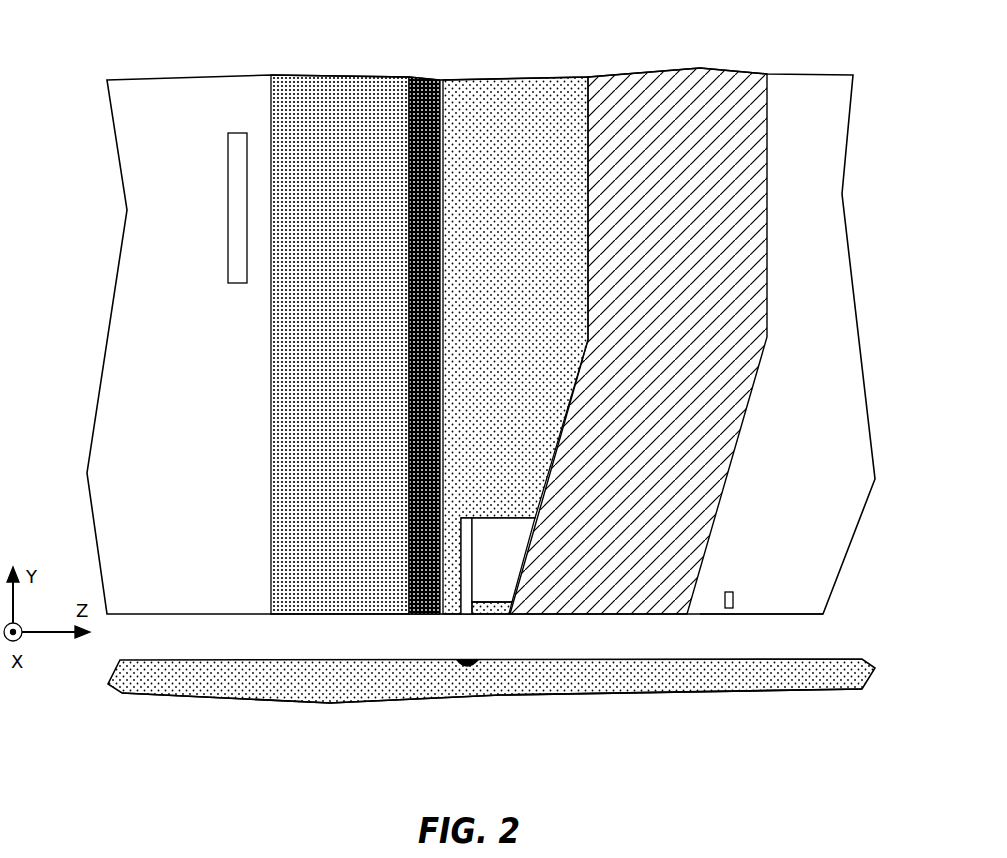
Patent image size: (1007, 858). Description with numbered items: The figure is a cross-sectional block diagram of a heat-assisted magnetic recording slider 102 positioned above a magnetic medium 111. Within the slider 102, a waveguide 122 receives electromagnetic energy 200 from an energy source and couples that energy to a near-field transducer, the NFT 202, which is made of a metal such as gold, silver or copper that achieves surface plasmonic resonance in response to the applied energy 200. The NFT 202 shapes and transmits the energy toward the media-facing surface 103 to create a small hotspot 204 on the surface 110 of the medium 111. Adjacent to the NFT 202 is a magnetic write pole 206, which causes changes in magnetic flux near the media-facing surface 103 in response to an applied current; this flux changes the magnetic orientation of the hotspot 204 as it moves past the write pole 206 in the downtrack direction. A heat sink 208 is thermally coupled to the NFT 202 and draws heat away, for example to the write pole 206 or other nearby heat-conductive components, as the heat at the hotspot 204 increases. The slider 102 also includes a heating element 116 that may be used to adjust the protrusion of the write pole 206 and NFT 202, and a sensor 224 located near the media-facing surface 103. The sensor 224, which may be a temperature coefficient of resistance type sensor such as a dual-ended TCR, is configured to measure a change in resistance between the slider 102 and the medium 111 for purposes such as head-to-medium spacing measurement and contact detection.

The slider 102 is at (160, 49).
The media-facing surface 103 is at (822, 616).
The surface of medium 110 is at (640, 676).
The medium 111 is at (670, 670).
The heating element 116 is at (227, 233).
The waveguide 122 is at (583, 44).
The electromagnetic energy 200 is at (461, 221).
The NFT 202 is at (481, 646).
The hotspot 204 is at (470, 668).
The magnetic write pole 206 is at (689, 69).
The heat sink 208 is at (490, 593).
The sensor 224 is at (730, 590).